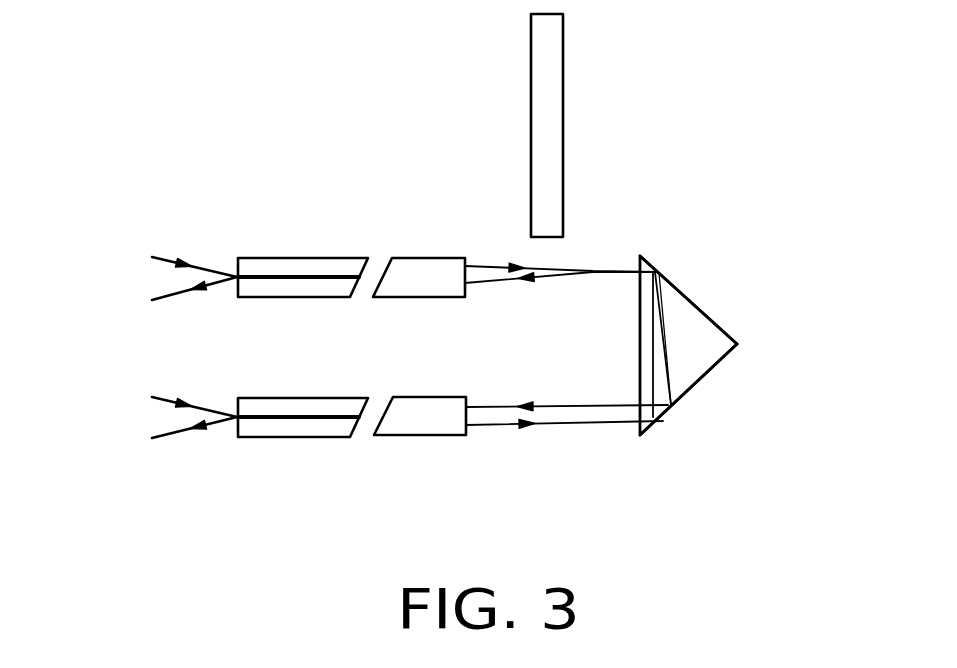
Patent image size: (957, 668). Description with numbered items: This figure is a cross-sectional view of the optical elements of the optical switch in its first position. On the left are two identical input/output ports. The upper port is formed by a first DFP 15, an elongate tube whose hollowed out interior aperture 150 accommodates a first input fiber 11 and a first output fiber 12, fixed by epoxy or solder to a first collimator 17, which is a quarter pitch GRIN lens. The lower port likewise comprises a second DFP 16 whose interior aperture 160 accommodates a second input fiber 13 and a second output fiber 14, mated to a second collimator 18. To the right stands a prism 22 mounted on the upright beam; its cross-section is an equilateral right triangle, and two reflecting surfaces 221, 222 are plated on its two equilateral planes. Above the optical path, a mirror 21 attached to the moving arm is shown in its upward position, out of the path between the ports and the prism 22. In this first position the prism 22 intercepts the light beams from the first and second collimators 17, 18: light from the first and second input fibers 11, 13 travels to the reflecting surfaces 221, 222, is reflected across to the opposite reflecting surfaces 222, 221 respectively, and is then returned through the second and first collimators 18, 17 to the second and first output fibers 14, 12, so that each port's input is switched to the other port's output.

The first input fiber 11 is at (177, 256).
The first output fiber 12 is at (177, 298).
The second input fiber 13 is at (174, 397).
The second output fiber 14 is at (174, 439).
The first DFP 15 is at (293, 258).
The interior aperture 150 is at (318, 277).
The second DFP 16 is at (297, 398).
The interior aperture 160 is at (300, 417).
The first collimator 17 is at (420, 258).
The second collimator 18 is at (422, 435).
The mirror 21 is at (545, 92).
The prism 22 is at (692, 298).
The reflecting surface 221 is at (715, 325).
The reflecting surface 222 is at (690, 390).